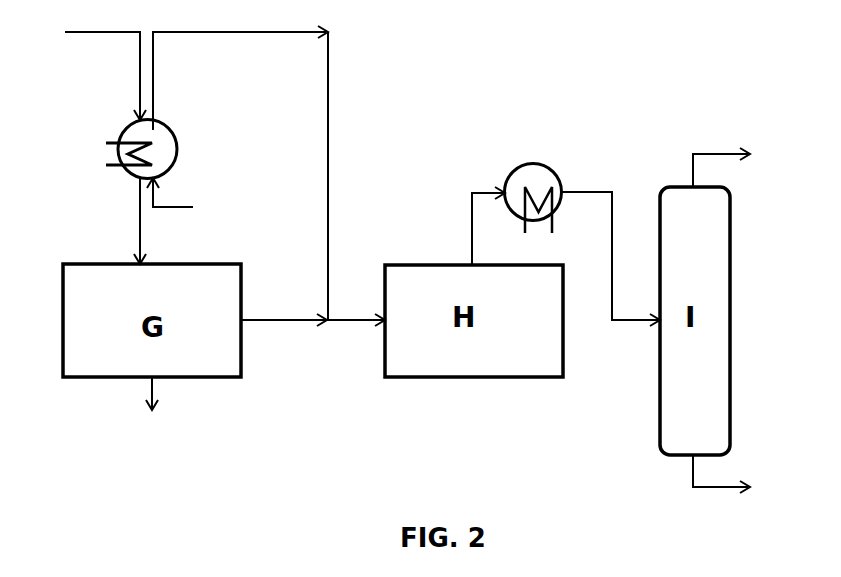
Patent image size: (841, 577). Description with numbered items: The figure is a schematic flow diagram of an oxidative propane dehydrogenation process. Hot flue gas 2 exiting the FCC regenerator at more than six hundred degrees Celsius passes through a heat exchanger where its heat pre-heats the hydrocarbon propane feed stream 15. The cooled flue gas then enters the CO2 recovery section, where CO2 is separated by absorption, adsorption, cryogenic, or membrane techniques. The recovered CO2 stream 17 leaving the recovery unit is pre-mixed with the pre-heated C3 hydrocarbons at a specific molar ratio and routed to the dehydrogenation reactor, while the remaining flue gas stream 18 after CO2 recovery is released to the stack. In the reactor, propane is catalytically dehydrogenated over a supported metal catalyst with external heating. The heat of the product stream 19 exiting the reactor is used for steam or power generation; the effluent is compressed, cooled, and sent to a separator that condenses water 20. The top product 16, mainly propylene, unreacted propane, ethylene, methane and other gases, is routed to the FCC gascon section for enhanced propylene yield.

The flue gas 2 is at (94, 72).
The hydrocarbon (propane) feed stream 15 is at (183, 198).
The top product 16 is at (738, 166).
The recovered CO2 stream 17 is at (313, 310).
The remaining flue gas stream 18 is at (152, 409).
The product stream 19 is at (473, 226).
The water 20 is at (738, 476).